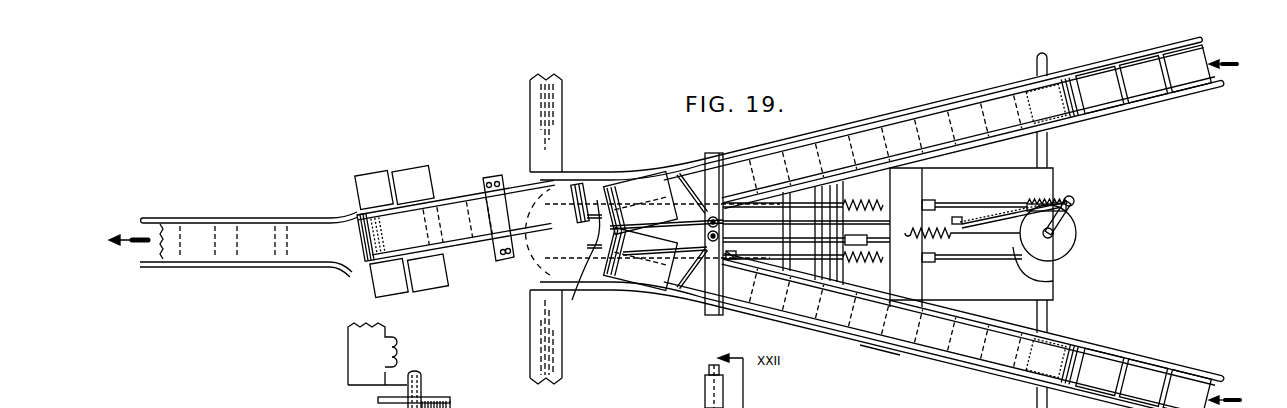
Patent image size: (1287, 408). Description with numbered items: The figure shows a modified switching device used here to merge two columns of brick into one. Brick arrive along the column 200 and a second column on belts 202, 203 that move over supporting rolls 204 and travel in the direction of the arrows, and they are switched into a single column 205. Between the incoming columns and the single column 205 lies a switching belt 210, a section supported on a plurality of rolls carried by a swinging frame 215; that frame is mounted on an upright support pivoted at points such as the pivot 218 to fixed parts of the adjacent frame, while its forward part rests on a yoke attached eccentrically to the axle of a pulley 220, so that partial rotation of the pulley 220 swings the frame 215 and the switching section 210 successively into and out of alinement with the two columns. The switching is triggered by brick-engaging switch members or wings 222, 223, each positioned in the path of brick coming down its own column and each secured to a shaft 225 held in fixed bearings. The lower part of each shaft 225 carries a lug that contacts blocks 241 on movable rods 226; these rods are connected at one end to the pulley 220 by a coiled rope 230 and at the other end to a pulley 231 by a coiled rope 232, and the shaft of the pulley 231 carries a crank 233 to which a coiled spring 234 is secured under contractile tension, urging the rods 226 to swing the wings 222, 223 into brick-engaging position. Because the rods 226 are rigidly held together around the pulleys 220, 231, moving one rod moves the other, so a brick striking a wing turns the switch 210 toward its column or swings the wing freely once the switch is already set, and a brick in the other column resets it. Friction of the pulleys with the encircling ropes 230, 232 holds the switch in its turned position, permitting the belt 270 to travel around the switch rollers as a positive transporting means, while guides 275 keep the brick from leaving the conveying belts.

The column 200 is at (1247, 229).
The belt 202 is at (863, 138).
The belt 203 is at (952, 348).
The supporting rolls 204 is at (1099, 104).
The single column 205 is at (197, 233).
The switching belt 210 is at (455, 217).
The swinging frame 215 is at (478, 262).
The pivot 218 is at (422, 391).
The pulley 220 is at (530, 272).
The switch member 222 is at (694, 188).
The switch member 223 is at (690, 273).
The shaft 225 is at (714, 217).
The rods 226 is at (762, 218).
The coiled spring or rope 230 is at (597, 200).
The pulley 231 is at (1062, 243).
The coiled rope 232 is at (1053, 278).
The crank 233 is at (1068, 221).
The coiled spring 234 is at (1028, 206).
The blocks 241 is at (731, 252).
The belt 270 is at (225, 250).
The guides 275 is at (263, 218).